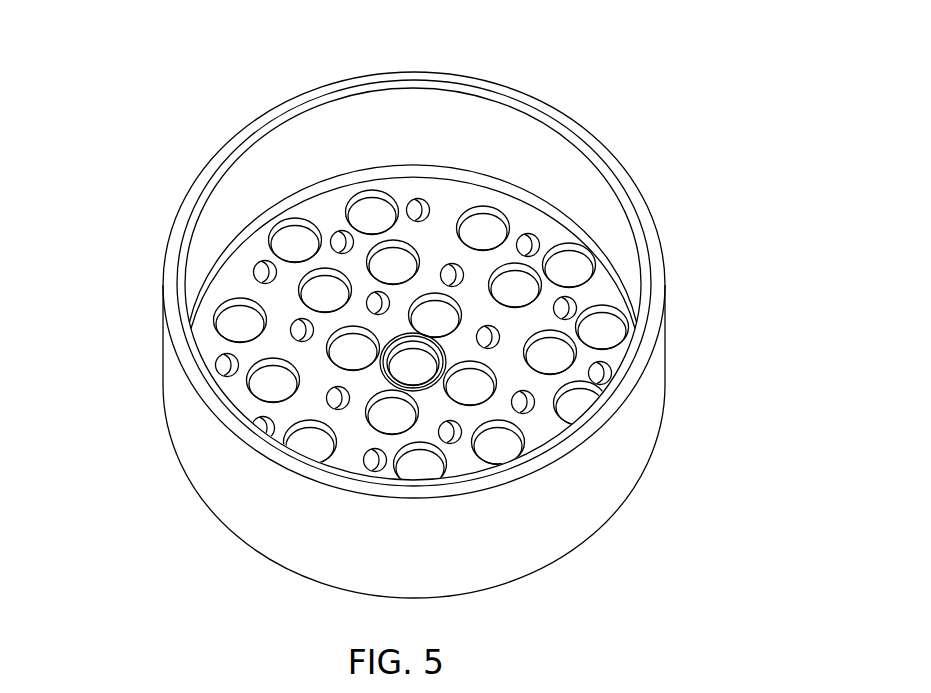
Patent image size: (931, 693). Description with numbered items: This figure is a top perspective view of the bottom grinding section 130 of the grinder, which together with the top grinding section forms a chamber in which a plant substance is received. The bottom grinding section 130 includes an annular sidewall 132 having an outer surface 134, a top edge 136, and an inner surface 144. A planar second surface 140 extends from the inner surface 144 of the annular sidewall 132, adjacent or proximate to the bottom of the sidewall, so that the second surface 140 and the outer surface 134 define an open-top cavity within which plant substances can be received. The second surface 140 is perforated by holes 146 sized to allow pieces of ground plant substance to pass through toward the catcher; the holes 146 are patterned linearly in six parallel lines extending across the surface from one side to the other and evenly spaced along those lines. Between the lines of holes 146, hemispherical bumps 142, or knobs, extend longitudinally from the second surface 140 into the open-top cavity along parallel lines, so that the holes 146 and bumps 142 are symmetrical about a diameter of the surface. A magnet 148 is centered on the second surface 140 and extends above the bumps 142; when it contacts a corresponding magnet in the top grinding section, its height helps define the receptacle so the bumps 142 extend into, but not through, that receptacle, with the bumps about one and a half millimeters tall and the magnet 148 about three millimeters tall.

The bottom grinding section 130 is at (440, 306).
The annular sidewall 132 is at (643, 430).
The outer surface 134 is at (280, 494).
The top edge 136 is at (201, 374).
The second surface 140 is at (539, 201).
The bumps 142 is at (567, 297).
The inner surface 144 is at (302, 136).
The holes 146 is at (243, 304).
The magnet 148 is at (414, 352).